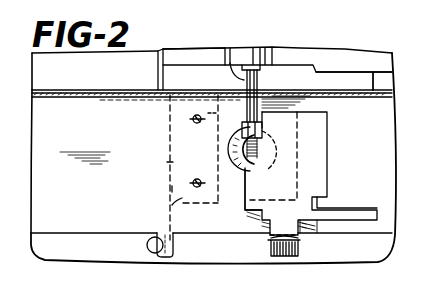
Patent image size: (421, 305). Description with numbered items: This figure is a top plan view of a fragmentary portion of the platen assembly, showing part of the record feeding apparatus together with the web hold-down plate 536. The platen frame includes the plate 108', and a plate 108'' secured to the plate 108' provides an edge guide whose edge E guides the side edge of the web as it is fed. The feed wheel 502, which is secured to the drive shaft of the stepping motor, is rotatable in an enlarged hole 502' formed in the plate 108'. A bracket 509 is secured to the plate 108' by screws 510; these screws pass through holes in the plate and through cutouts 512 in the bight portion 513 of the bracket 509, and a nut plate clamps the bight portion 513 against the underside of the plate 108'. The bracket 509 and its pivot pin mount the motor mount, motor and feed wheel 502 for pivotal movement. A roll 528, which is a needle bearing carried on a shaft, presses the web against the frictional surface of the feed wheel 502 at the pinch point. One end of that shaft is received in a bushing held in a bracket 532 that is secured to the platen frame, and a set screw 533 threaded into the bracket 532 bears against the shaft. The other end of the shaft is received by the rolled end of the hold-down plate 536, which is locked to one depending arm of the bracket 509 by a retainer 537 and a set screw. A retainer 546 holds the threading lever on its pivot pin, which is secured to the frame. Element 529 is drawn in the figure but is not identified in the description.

The top plate section 529 is at (223, 47).
The bracket 532 is at (270, 36).
The plate 108'' is at (354, 56).
The edge E is at (97, 93).
The bracket 509 is at (165, 136).
The roll 528 is at (242, 127).
The feed wheel 502 is at (311, 173).
The bight portion 513 is at (170, 162).
The cutouts 512 is at (190, 184).
The screws 510 is at (191, 187).
The plate 108' is at (85, 178).
The web hold-down plate 536 is at (332, 170).
The enlarged hole 502' is at (228, 199).
The retainer 546 is at (153, 254).
The retainer 537 is at (285, 257).
The set screw 533 is at (98, 301).